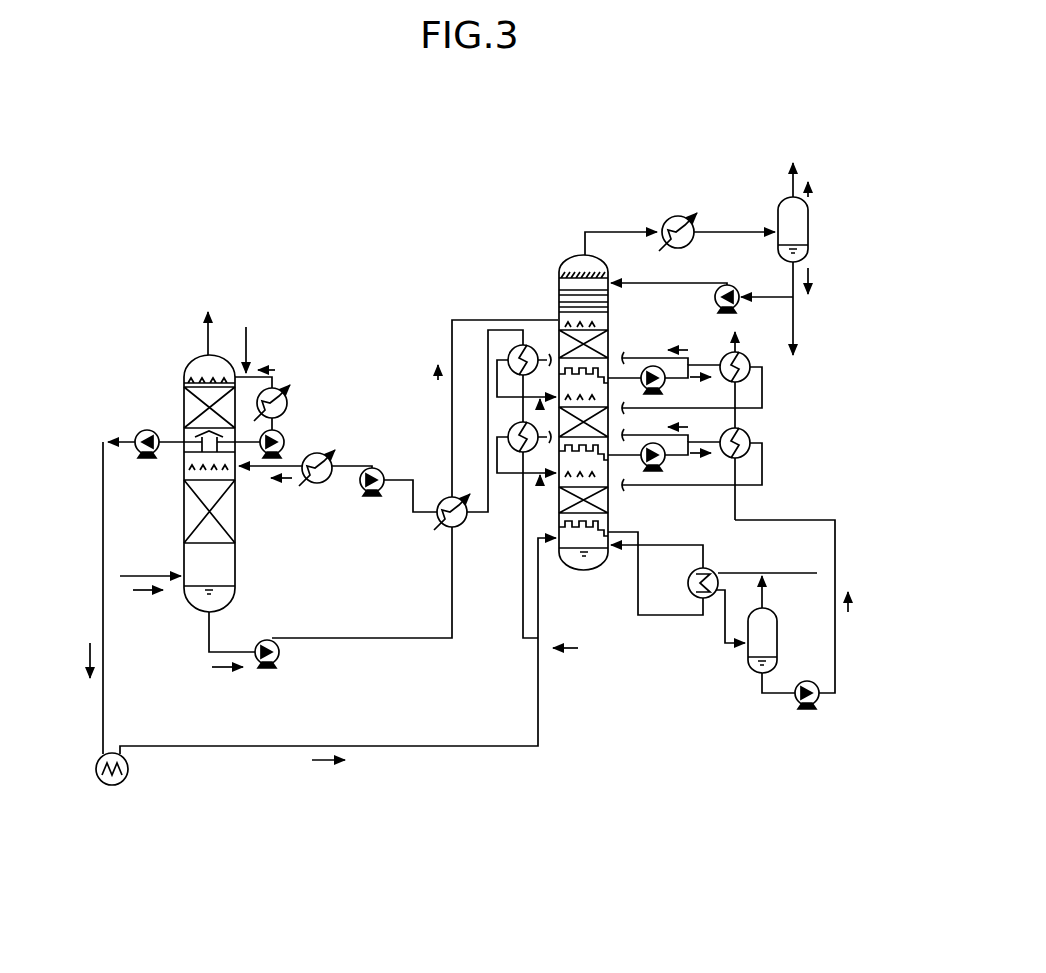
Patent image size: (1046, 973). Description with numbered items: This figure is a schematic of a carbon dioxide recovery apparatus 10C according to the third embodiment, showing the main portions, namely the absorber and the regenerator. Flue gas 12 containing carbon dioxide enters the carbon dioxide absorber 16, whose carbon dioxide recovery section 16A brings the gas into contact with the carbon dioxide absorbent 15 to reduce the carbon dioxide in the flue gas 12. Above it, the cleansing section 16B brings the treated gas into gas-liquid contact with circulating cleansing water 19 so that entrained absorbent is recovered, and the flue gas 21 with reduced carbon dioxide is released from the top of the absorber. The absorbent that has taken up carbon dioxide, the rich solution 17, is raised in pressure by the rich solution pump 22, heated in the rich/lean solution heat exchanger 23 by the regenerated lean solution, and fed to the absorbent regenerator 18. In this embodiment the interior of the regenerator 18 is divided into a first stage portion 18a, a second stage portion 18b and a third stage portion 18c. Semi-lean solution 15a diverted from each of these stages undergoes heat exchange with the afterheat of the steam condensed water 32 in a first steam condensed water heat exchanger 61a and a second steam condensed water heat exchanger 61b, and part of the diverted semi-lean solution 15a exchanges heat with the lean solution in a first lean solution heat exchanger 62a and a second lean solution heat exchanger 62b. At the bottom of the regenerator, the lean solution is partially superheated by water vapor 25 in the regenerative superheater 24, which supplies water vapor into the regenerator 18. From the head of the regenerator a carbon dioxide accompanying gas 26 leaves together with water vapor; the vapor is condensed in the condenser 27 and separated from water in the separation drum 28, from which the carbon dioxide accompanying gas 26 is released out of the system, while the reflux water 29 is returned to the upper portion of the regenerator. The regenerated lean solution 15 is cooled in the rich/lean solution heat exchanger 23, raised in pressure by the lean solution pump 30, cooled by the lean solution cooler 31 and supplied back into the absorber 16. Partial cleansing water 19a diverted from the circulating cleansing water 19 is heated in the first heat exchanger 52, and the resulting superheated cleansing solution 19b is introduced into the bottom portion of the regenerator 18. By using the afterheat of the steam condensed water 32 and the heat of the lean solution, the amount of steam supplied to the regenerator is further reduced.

The CO2 recovery apparatus 10C is at (320, 155).
The CO2 absorber 16 is at (222, 342).
The CO2 recovery section 16A is at (228, 517).
The cleansing section 16B is at (188, 405).
The flue gas with CO2 reduced 21 is at (208, 328).
The circulating cleansing water 19 is at (262, 368).
The partial cleansing water 19a is at (86, 641).
The superheated cleansing solution 19b is at (332, 765).
The CO2 absorbent (lean solution) 15 is at (291, 470).
The rich solution 17 is at (432, 372).
The flue gas 12 is at (148, 595).
The rich solution pump 22 is at (280, 663).
The rich/lean solution heat exchanger 23 is at (445, 528).
The lean solution pump 30 is at (380, 467).
The lean solution cooler 31 is at (312, 484).
The first heat exchanger 52 is at (115, 786).
The absorbent regenerator 18 is at (570, 252).
The first stage portion 18a is at (603, 346).
The second stage portion 18b is at (603, 429).
The third stage portion 18c is at (603, 512).
The first lean solution heat exchanger 62a is at (523, 344).
The second lean solution heat exchanger 62b is at (516, 452).
The semi-lean solution 15a is at (666, 409).
The first steam condensed water heat exchanger 61a is at (745, 356).
The second steam condensed water heat exchanger 61b is at (750, 436).
The CO2 accompanying gas 26 is at (612, 231).
The condenser 27 is at (668, 217).
The separation drum 28 is at (809, 234).
The reflux water 29 is at (713, 300).
The regenerative superheater 24 is at (706, 567).
The water vapor 25 is at (788, 573).
The steam condensed water 32 is at (848, 626).